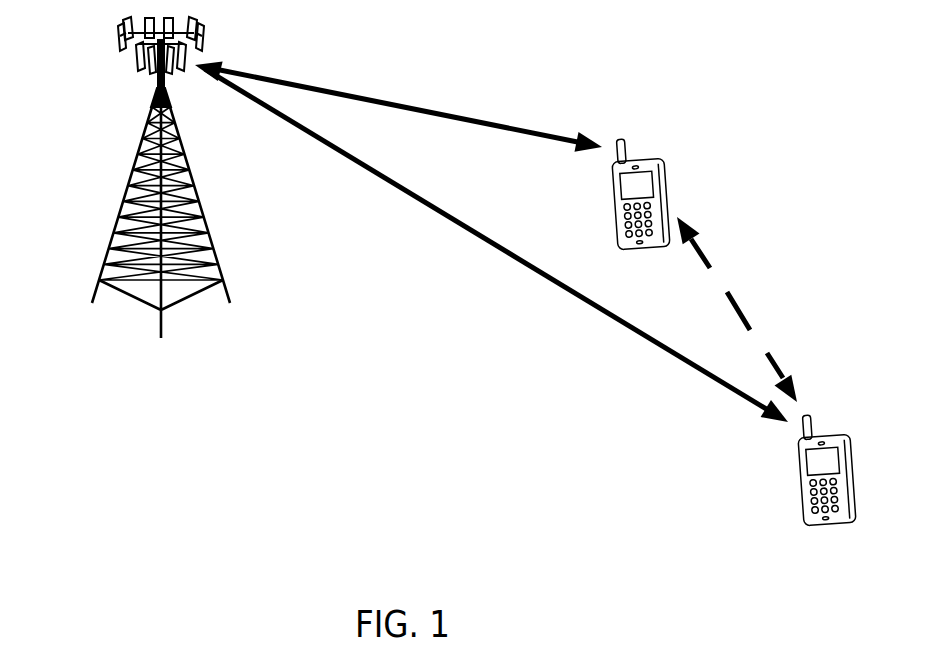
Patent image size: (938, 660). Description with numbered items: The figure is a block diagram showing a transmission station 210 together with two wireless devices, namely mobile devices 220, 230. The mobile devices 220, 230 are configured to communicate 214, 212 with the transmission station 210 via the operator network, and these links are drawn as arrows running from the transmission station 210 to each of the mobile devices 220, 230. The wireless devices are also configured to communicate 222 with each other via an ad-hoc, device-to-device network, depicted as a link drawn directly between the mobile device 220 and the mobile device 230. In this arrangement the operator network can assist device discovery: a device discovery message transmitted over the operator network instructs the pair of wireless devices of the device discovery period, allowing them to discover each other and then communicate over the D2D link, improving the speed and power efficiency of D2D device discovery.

The transmission station 210 is at (110, 253).
The communication with transmission station 212 is at (443, 109).
The communication with transmission station 214 is at (522, 268).
The mobile device 220 is at (645, 158).
The device-to-device communication 222 is at (742, 308).
The mobile device 230 is at (830, 434).